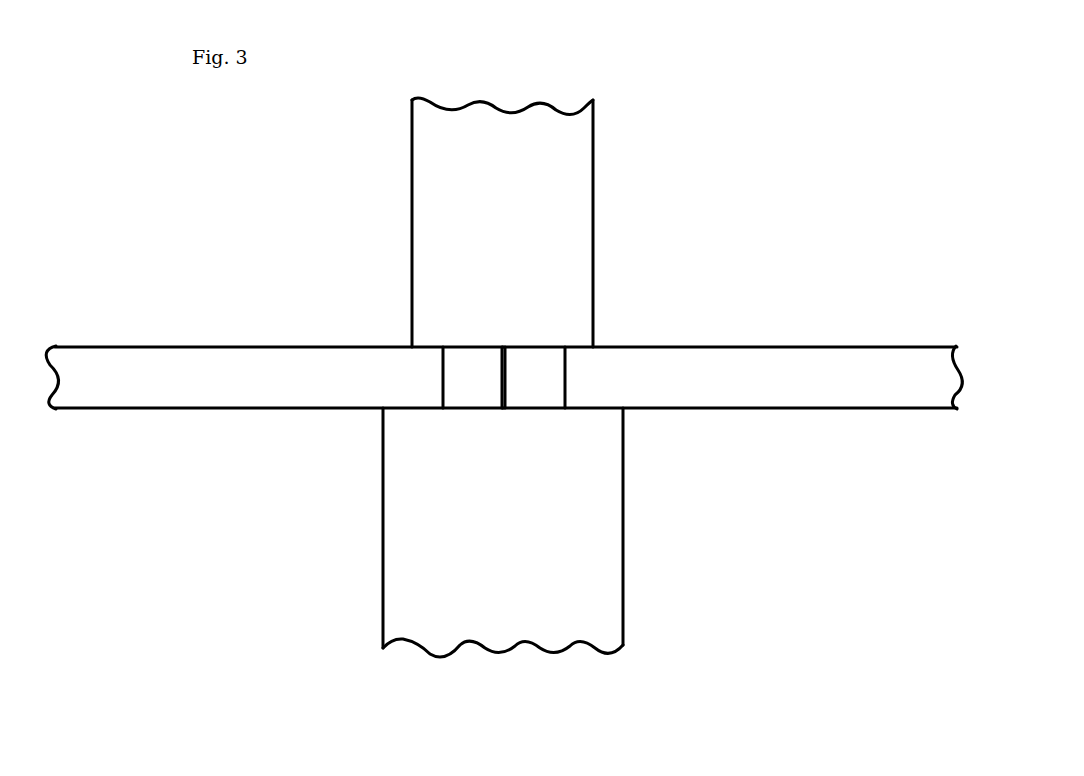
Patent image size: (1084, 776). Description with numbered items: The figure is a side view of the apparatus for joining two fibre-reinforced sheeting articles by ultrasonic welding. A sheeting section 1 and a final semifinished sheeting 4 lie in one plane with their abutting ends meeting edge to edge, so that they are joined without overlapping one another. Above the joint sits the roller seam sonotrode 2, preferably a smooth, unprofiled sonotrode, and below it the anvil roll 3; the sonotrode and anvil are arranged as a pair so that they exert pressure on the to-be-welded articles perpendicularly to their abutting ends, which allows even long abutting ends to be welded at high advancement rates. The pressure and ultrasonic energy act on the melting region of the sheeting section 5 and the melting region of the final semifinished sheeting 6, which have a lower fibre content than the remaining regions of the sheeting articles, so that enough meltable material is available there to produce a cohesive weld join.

The sheeting section 1 is at (122, 377).
The roller seam sonotrode 2 is at (453, 223).
The anvil roll 3 is at (430, 533).
The final semifinished sheeting 4 is at (782, 385).
The melting region of the sheeting section 5 is at (478, 372).
The melting region of the final semifinished sheeting 6 is at (527, 390).